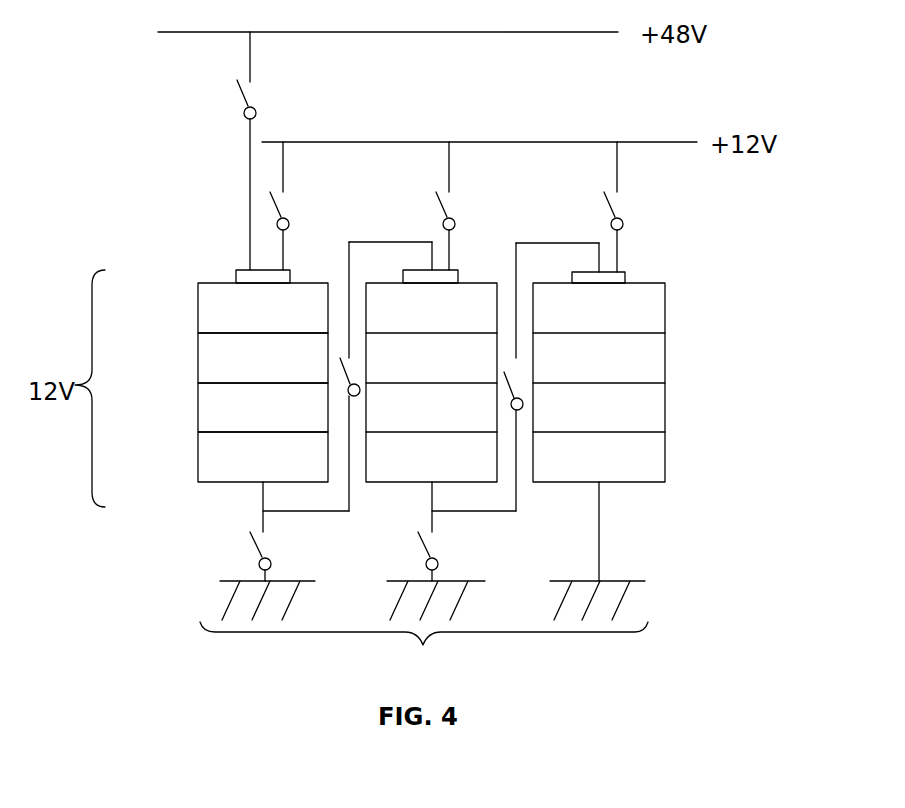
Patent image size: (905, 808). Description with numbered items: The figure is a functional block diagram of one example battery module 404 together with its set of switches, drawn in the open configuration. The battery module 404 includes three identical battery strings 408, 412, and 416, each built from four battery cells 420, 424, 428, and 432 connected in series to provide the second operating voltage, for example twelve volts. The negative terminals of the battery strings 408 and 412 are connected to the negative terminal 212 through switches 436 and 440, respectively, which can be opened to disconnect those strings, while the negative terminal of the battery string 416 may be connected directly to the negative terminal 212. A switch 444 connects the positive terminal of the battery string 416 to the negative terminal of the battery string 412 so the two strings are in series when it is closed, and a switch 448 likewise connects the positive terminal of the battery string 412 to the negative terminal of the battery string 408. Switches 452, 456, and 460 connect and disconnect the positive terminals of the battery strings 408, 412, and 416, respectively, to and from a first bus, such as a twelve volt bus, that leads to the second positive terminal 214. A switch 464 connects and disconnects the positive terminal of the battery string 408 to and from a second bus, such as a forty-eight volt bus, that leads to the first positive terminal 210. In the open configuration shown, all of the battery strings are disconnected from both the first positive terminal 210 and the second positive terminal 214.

The first positive terminal 210 is at (551, 32).
The negative terminal 212 is at (670, 593).
The second positive terminal 214 is at (630, 142).
The battery module 404 is at (385, 346).
The battery string 408 is at (221, 347).
The battery string 412 is at (467, 282).
The battery string 416 is at (643, 283).
The battery cell 420 is at (198, 308).
The battery cell 424 is at (198, 357).
The battery cell 428 is at (198, 407).
The battery cell 432 is at (198, 457).
The switch 436 is at (233, 558).
The switch 440 is at (410, 562).
The switch 444 is at (522, 415).
The switch 448 is at (357, 402).
The switch 452 is at (291, 203).
The switch 456 is at (456, 203).
The switch 460 is at (621, 203).
The switch 464 is at (265, 97).